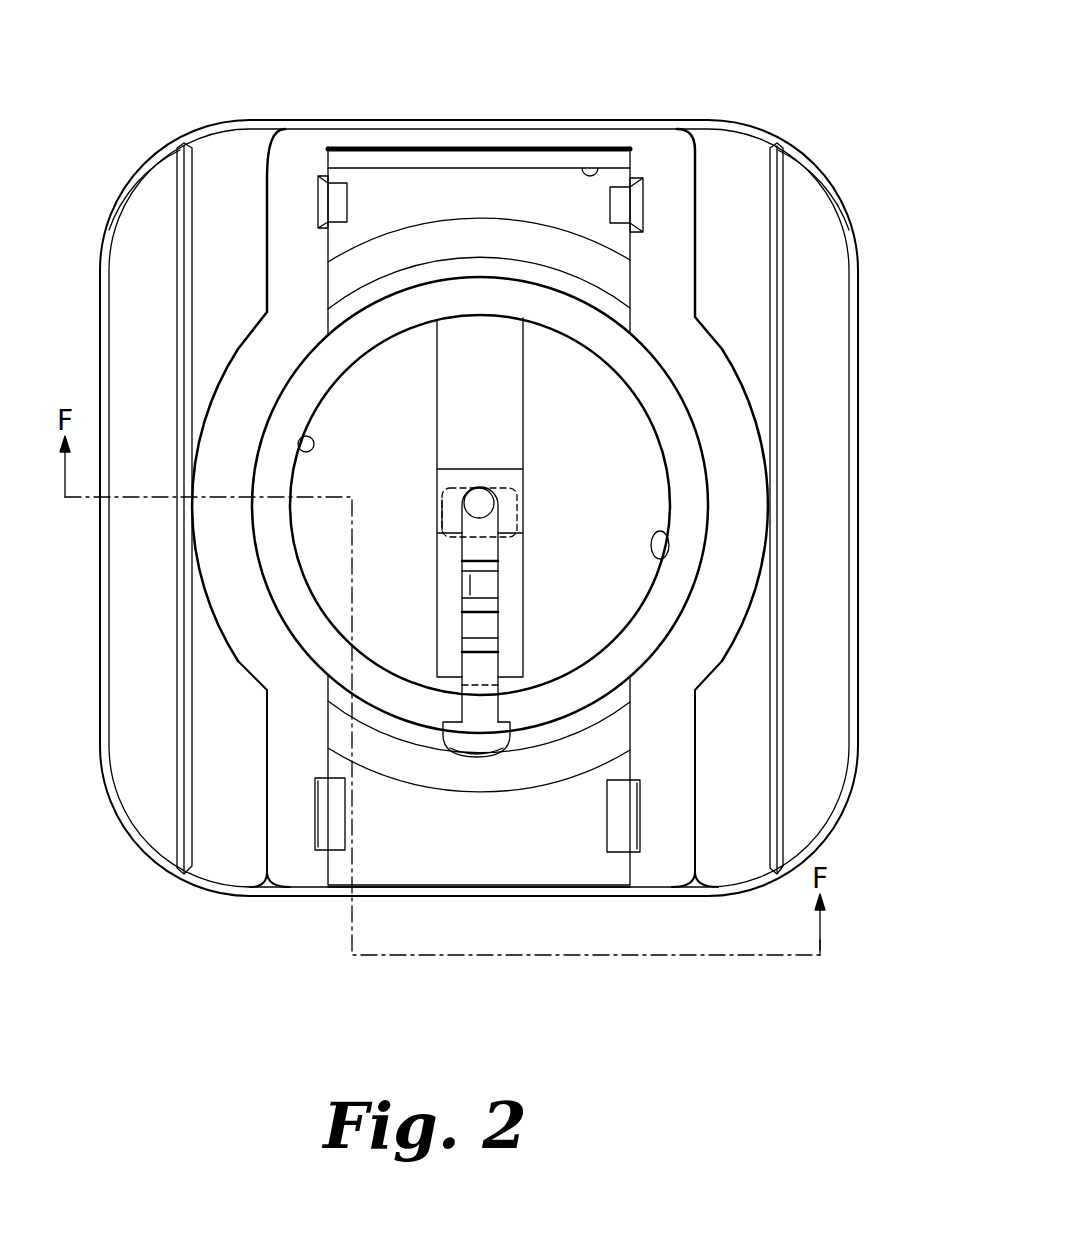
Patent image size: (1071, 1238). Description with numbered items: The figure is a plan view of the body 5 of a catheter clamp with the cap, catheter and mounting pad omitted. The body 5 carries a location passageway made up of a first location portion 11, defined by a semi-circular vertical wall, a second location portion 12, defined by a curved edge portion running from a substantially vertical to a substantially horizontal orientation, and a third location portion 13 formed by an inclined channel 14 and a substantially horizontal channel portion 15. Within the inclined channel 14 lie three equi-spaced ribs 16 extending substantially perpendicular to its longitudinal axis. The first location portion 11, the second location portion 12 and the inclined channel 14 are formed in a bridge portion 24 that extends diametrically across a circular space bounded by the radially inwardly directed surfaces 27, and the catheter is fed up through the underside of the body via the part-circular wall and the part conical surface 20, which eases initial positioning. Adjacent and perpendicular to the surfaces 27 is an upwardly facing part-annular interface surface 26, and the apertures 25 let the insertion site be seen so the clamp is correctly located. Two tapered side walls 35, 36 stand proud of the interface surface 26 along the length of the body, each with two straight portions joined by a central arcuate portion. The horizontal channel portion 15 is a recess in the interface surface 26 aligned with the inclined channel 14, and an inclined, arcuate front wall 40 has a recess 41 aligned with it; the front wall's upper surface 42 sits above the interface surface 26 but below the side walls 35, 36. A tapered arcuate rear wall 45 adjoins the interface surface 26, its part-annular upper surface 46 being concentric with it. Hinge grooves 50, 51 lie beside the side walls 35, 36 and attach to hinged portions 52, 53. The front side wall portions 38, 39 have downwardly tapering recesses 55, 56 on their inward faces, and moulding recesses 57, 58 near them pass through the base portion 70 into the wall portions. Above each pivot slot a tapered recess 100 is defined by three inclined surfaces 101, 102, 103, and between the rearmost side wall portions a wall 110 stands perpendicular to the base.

The body 5 is at (735, 90).
The first location portion 11 is at (468, 495).
The second location portion 12 is at (485, 527).
The third location portion 13 is at (505, 612).
The inclined channel 14 is at (490, 585).
The horizontal channel portion 15 is at (463, 707).
The ribs 16 is at (490, 567).
The part conical surface 20 is at (440, 528).
The bridge portion 24 is at (523, 395).
The apertures 25 is at (382, 486).
The interface surface 26 is at (686, 450).
The radially inwardly directed surfaces 27 is at (300, 445).
The side wall 35 is at (237, 347).
The side wall 36 is at (722, 347).
The side wall portion 38 is at (282, 772).
The side wall portion 39 is at (667, 795).
The front wall 40 is at (568, 747).
The recess 41 is at (477, 740).
The upper surface 42 is at (593, 703).
The rear wall 45 is at (497, 245).
The upper surface 46 is at (418, 275).
The hinge groove 50 is at (177, 800).
The hinge groove 51 is at (780, 813).
The hinged portion 52 is at (143, 232).
The hinged portion 53 is at (810, 232).
The recess 55 is at (315, 845).
The recess 56 is at (633, 835).
The moulding recess 57 is at (332, 840).
The moulding recess 58 is at (617, 838).
The base portion 70 is at (520, 840).
The tapered recess 100 is at (318, 203).
The inclined surface 101 is at (330, 180).
The inclined surface 102 is at (323, 185).
The inclined surface 103 is at (490, 187).
The wall 110 is at (605, 172).